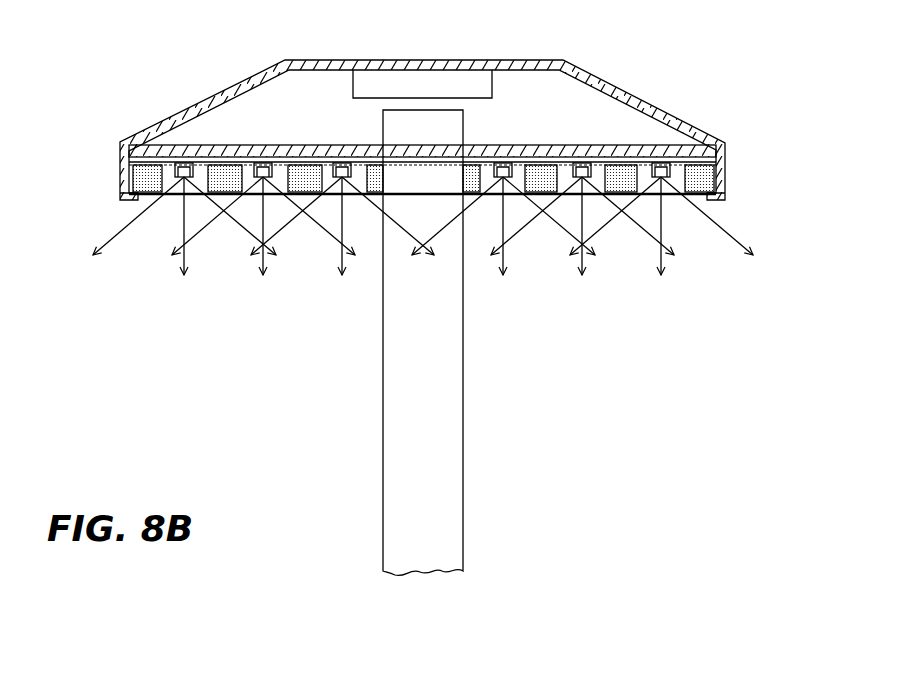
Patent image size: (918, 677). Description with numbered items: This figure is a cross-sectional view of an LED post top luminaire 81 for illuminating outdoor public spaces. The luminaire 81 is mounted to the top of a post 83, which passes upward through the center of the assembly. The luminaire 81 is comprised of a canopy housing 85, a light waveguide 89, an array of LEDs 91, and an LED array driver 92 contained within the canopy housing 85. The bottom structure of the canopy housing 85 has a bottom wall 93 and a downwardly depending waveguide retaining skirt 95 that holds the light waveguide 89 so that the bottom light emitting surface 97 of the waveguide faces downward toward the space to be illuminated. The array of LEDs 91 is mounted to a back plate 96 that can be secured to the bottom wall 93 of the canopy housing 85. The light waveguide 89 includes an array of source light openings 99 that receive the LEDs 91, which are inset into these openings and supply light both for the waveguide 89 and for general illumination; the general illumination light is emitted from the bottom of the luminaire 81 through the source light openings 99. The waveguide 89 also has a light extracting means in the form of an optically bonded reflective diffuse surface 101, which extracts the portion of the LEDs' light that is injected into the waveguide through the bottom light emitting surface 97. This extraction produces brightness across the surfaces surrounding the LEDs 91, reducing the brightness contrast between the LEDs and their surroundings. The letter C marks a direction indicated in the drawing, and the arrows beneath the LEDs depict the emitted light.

The luminaire 81 is at (437, 170).
The post 83 is at (397, 375).
The canopy housing 85 is at (222, 92).
The light waveguide 89 is at (717, 198).
The array of LEDs 91 is at (426, 123).
The LED array driver 92 is at (408, 78).
The bottom wall 93 is at (575, 158).
The waveguide retaining skirt 95 is at (700, 180).
The back plate 96 is at (553, 157).
The bottom light emitting surface 97 is at (232, 198).
The source light openings 99 is at (175, 198).
The optically bonded reflective diffuse surface 101 is at (630, 165).
The light distribution axis C is at (115, 237).